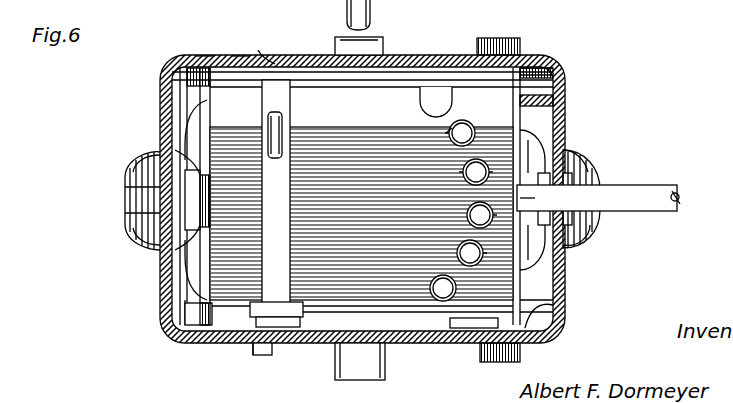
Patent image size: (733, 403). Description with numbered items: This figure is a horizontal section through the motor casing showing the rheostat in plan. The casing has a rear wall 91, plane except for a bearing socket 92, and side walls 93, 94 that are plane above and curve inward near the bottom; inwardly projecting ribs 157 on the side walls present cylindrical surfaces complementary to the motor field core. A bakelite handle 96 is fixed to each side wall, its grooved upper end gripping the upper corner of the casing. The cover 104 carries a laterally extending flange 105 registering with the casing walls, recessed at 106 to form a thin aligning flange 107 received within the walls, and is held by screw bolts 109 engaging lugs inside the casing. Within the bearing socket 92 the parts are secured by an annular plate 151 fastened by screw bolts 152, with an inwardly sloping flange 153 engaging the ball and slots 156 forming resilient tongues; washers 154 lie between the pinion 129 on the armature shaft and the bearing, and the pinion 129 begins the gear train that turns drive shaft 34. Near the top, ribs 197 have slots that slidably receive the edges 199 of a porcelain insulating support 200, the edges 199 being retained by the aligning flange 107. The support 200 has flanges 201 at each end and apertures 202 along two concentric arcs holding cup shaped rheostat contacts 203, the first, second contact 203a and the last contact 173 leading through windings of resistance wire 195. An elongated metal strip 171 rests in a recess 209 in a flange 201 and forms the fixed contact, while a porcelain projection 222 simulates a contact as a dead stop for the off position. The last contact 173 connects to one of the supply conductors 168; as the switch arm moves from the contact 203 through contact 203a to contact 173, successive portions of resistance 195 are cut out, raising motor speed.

The drive shaft 34 is at (347, 15).
The rear wall 91 is at (557, 297).
The bearing socket 92 is at (585, 222).
The side wall 93 is at (528, 53).
The side wall 94 is at (502, 362).
The handle 96 is at (372, 42).
The cover 104 is at (197, 300).
The laterally extending flange 105 is at (205, 57).
The recess 106 is at (258, 345).
The aligning flange 107 is at (241, 57).
The screw bolt 109 is at (168, 63).
The pinion 129 is at (187, 240).
The annular plate 151 is at (578, 243).
The screw bolt 152 is at (550, 272).
The annular inwardly sloping flange 153 is at (593, 182).
The washer 154 is at (200, 173).
The slot 156 is at (160, 194).
The rib 157 is at (537, 99).
The supply conductor 168 is at (660, 187).
The elongated metal strip 171 is at (275, 300).
The last contact 173 is at (445, 292).
The resistance winding 195 is at (328, 190).
The rib 197 is at (528, 68).
The edge 199 is at (462, 374).
The insulating support 200 is at (220, 108).
The flange 201 is at (481, 42).
The aperture 202 is at (487, 120).
The rheostat contact 203 is at (443, 160).
The second rheostat contact 203a is at (523, 175).
The recess 209 is at (286, 305).
The porcelain projection 222 is at (437, 92).